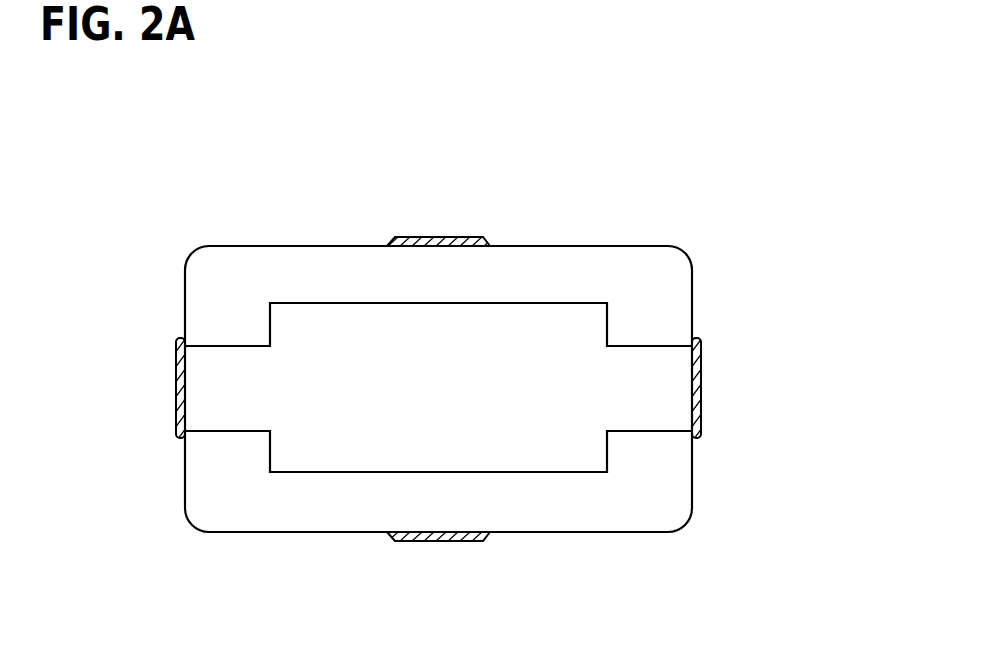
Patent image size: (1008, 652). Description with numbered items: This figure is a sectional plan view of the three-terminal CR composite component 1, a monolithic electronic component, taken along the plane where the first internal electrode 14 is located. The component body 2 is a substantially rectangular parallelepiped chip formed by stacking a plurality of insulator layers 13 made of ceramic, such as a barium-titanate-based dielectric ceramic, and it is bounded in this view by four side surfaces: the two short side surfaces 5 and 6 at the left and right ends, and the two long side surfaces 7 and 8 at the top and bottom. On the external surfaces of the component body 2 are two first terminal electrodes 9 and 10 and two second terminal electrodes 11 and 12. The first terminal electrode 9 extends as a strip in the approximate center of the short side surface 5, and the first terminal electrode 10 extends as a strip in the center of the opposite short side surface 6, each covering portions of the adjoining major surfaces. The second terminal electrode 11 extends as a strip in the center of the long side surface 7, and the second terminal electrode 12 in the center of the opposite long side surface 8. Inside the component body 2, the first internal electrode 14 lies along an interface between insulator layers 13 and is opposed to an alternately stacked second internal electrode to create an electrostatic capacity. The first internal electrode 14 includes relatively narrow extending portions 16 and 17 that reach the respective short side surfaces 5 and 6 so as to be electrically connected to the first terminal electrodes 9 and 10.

The three-terminal CR composite component 1 is at (178, 95).
The component body 2 is at (590, 245).
The side surface 5 is at (692, 317).
The side surface 6 is at (185, 303).
The side surface 7 is at (302, 246).
The side surface 8 is at (288, 532).
The first terminal electrode 9 is at (701, 404).
The first terminal electrode 10 is at (177, 396).
The second terminal electrode 11 is at (439, 235).
The second terminal electrode 12 is at (447, 541).
The insulator layer 13 is at (665, 280).
The first internal electrode 14 is at (593, 302).
The extending portion 16 is at (641, 422).
The extending portion 17 is at (220, 422).